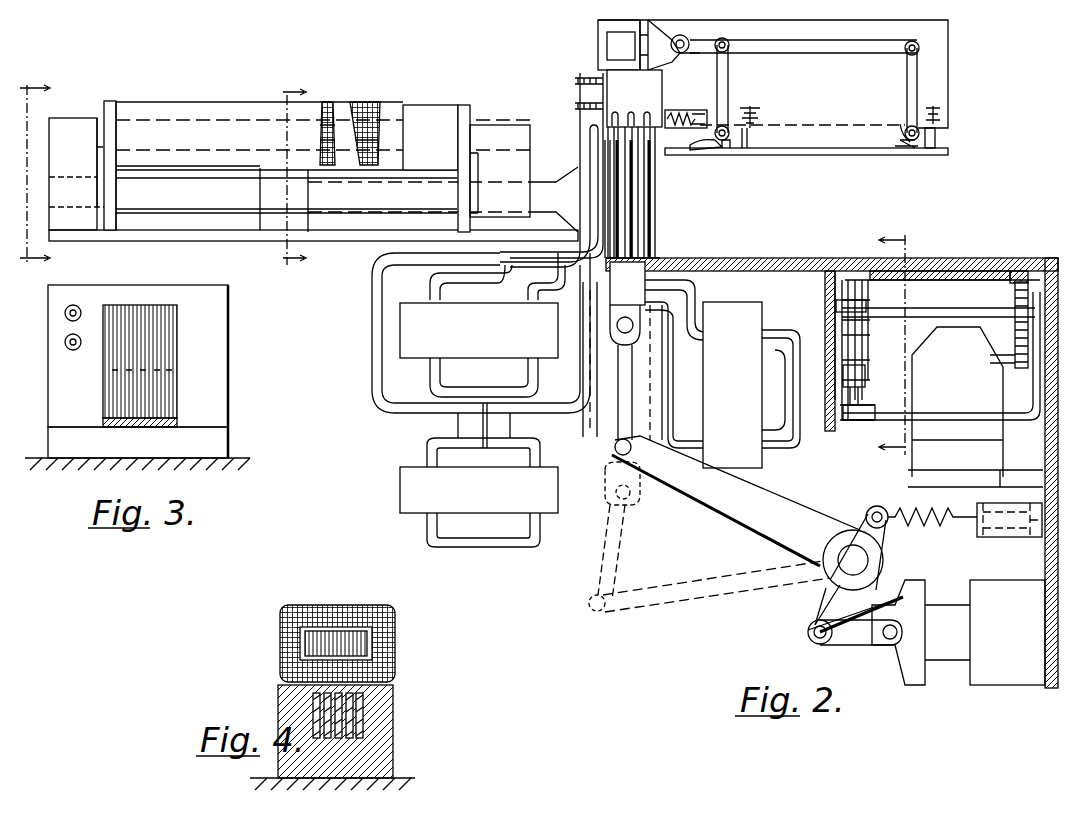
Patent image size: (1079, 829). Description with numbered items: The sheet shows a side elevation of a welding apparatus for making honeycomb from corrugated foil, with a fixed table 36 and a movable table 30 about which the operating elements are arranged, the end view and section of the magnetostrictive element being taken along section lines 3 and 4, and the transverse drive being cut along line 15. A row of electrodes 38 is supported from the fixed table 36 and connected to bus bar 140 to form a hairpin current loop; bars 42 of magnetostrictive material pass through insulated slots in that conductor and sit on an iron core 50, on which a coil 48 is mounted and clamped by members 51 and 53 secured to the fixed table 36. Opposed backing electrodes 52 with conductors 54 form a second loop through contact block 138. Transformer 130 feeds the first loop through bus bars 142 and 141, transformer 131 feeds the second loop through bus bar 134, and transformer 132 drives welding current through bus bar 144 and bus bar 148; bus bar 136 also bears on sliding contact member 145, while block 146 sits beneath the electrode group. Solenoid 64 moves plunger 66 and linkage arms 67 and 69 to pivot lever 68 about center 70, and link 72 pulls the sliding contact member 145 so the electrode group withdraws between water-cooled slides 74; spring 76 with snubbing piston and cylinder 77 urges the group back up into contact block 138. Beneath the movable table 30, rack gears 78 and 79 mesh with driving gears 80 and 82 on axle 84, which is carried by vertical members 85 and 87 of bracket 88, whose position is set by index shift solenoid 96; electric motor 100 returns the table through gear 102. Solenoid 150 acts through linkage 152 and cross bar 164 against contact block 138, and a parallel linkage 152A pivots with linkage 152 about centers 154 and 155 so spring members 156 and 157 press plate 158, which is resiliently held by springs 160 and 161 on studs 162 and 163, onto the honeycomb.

In FIG. 2, the section line 3— 3 is at (35, 177).
In FIG. 2, the section line 4— 4 is at (294, 179).
In FIG. 2, the section line 15— 15 is at (903, 343).
In FIG. 2, the movable table 30 is at (748, 256).
In FIG. 2, the fixed table 36 is at (180, 238).
In FIG. 3, the fixed table 36 is at (238, 458).
In FIG. 4, the fixed table 36 is at (405, 778).
In FIG. 2, the electrodes 38 is at (598, 170).
In FIG. 2, the bars of magnetostrictive material 42 is at (395, 212).
In FIG. 3, the bars of magnetostrictive material 42 is at (160, 400).
In FIG. 4, the bars of magnetostrictive material 42 is at (365, 718).
In FIG. 2, the coil 48 is at (440, 86).
In FIG. 4, the coil 48 is at (390, 642).
In FIG. 2, the iron core 50 is at (100, 118).
In FIG. 3, the iron core 50 is at (160, 350).
In FIG. 4, the iron core 50 is at (300, 645).
In FIG. 2, the clamping member 51 is at (118, 99).
In FIG. 3, the clamping member 51 is at (218, 370).
In FIG. 2, the backing electrodes 52 is at (612, 232).
In FIG. 2, the clamping member 53 is at (466, 100).
In FIG. 2, the conductors 54 is at (640, 205).
In FIG. 2, the solenoid 64 is at (1008, 688).
In FIG. 2, the plunger 66 is at (955, 652).
In FIG. 2, the linkage arm 67 is at (865, 645).
In FIG. 2, the lever 68 is at (740, 507).
In FIG. 2, the linkage arm 69 is at (808, 630).
In FIG. 2, the center 70 is at (858, 562).
In FIG. 2, the link 72 is at (610, 440).
In FIG. 2, the water-cooled slides 74 is at (585, 420).
In FIG. 2, the spring 76 is at (950, 530).
In FIG. 2, the snubbing piston and cylinder 77 is at (1012, 540).
In FIG. 2, the rack gear 78 is at (860, 272).
In FIG. 2, the rack gear 79 is at (1019, 268).
In FIG. 2, the driving gear 80 is at (866, 295).
In FIG. 2, the driving gear 82 is at (1030, 280).
In FIG. 2, the axle 84 is at (972, 304).
In FIG. 2, the vertical member 85 is at (832, 340).
In FIG. 2, the vertical member 87 is at (1030, 388).
In FIG. 2, the bracket 88 is at (985, 420).
In FIG. 2, the index shift solenoid 96 is at (868, 378).
In FIG. 2, the electric motor 100 is at (915, 390).
In FIG. 2, the gear 102 is at (1000, 355).
In FIG. 2, the transformer 130 is at (425, 358).
In FIG. 2, the transformer 131 is at (750, 452).
In FIG. 2, the transformer 132 is at (398, 492).
In FIG. 2, the bus bar 134 is at (685, 392).
In FIG. 2, the bus bar 136 is at (700, 345).
In FIG. 2, the contact block 138 is at (620, 90).
In FIG. 2, the bus bar 140 is at (588, 137).
In FIG. 2, the bus bar 141 is at (527, 285).
In FIG. 2, the bus bar 142 is at (437, 290).
In FIG. 2, the bus bar 144 is at (577, 352).
In FIG. 2, the sliding contact member 145 is at (652, 260).
In FIG. 2, the block 146 is at (620, 292).
In FIG. 2, the bus bar 148 is at (372, 358).
In FIG. 2, the solenoid 150 is at (598, 48).
In FIG. 2, the linkage 152 is at (728, 98).
In FIG. 2, the linkage 152A is at (908, 70).
In FIG. 2, the center 154 is at (720, 148).
In FIG. 2, the center 155 is at (897, 120).
In FIG. 2, the spring member 156 is at (705, 152).
In FIG. 2, the spring member 157 is at (920, 155).
In FIG. 2, the plate 158 is at (823, 155).
In FIG. 2, the spring 160 is at (758, 116).
In FIG. 2, the spring 161 is at (942, 118).
In FIG. 2, the stud 162 is at (744, 152).
In FIG. 2, the stud 163 is at (938, 142).
In FIG. 2, the cross bar 164 is at (700, 108).